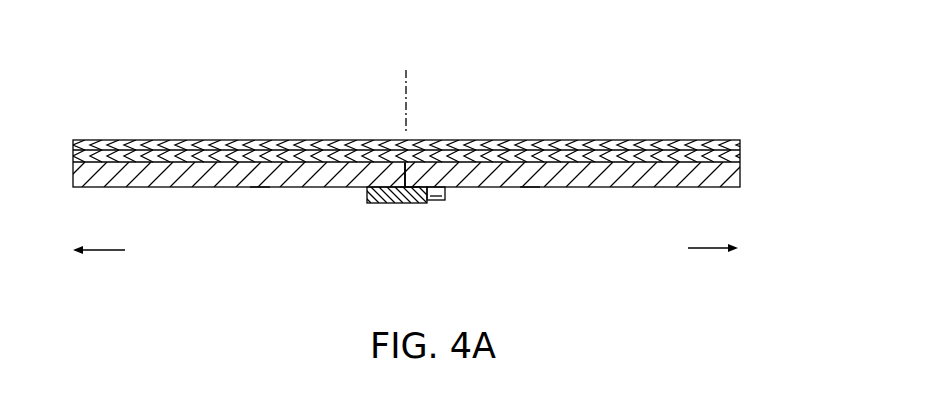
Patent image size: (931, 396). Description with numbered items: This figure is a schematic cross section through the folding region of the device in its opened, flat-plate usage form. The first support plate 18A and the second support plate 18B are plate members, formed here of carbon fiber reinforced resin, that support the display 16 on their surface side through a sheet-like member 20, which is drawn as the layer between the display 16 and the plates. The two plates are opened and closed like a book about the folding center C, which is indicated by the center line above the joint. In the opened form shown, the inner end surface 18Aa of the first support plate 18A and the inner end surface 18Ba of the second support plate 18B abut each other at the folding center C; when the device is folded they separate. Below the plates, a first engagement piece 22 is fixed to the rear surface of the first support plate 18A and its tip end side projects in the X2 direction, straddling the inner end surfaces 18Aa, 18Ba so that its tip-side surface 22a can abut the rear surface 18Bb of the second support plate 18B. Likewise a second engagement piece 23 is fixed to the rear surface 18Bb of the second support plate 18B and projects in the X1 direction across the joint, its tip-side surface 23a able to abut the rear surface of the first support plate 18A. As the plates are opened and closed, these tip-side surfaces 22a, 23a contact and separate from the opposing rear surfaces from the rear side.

The display 16 is at (738, 145).
The sheet-like member 20 is at (738, 153).
The first support plate 18A is at (177, 191).
The second support plate 18B is at (638, 191).
The inner end surface of the first support plate 18Aa is at (260, 188).
The inner end surface of the second support plate 18Ba is at (403, 170).
The rear surface of the second support plate 18Bb is at (530, 188).
The first engagement piece 22 is at (403, 204).
The surface on the tip side of the first engagement piece 22a is at (410, 184).
The second engagement piece 23 is at (440, 201).
The surface on the tip side of the second engagement piece 23a is at (437, 196).
The folding center C is at (406, 91).
The X1 direction X1 is at (99, 261).
The X2 direction X2 is at (713, 260).